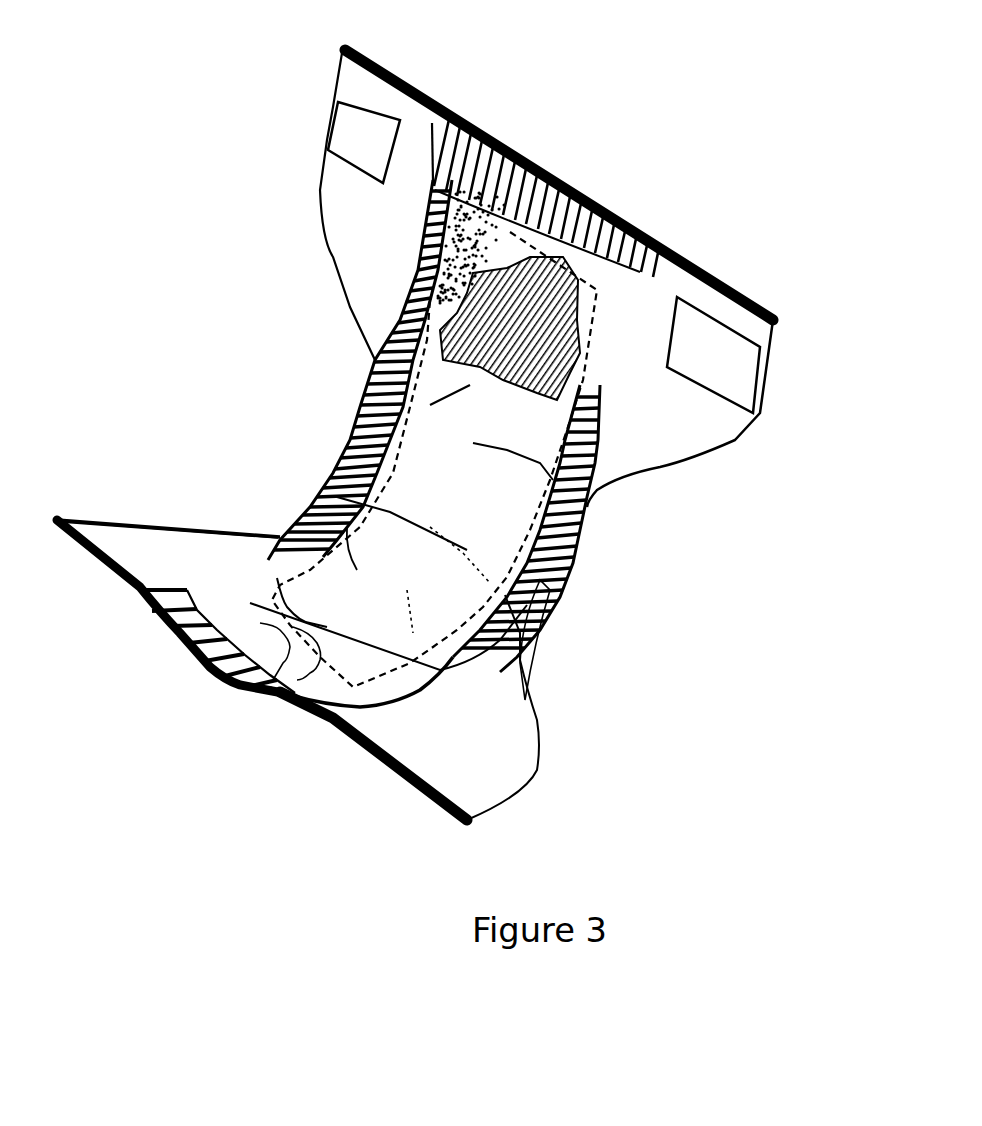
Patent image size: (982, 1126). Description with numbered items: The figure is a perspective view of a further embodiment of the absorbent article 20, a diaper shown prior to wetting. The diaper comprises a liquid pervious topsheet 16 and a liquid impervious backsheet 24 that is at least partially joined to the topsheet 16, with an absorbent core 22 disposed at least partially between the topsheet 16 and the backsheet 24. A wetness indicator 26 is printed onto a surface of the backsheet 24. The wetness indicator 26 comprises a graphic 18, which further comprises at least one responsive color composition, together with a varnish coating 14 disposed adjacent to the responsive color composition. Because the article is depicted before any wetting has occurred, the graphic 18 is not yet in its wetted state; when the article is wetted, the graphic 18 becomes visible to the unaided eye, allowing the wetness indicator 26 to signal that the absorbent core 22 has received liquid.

The varnish coating 14 is at (592, 305).
The liquid pervious topsheet 16 is at (317, 502).
The graphic 18 is at (508, 275).
The absorbent article (diaper) 20 is at (280, 265).
The absorbent core 22 is at (280, 538).
The liquid impervious backsheet 24 is at (243, 690).
The wetness indicator 26 is at (570, 362).